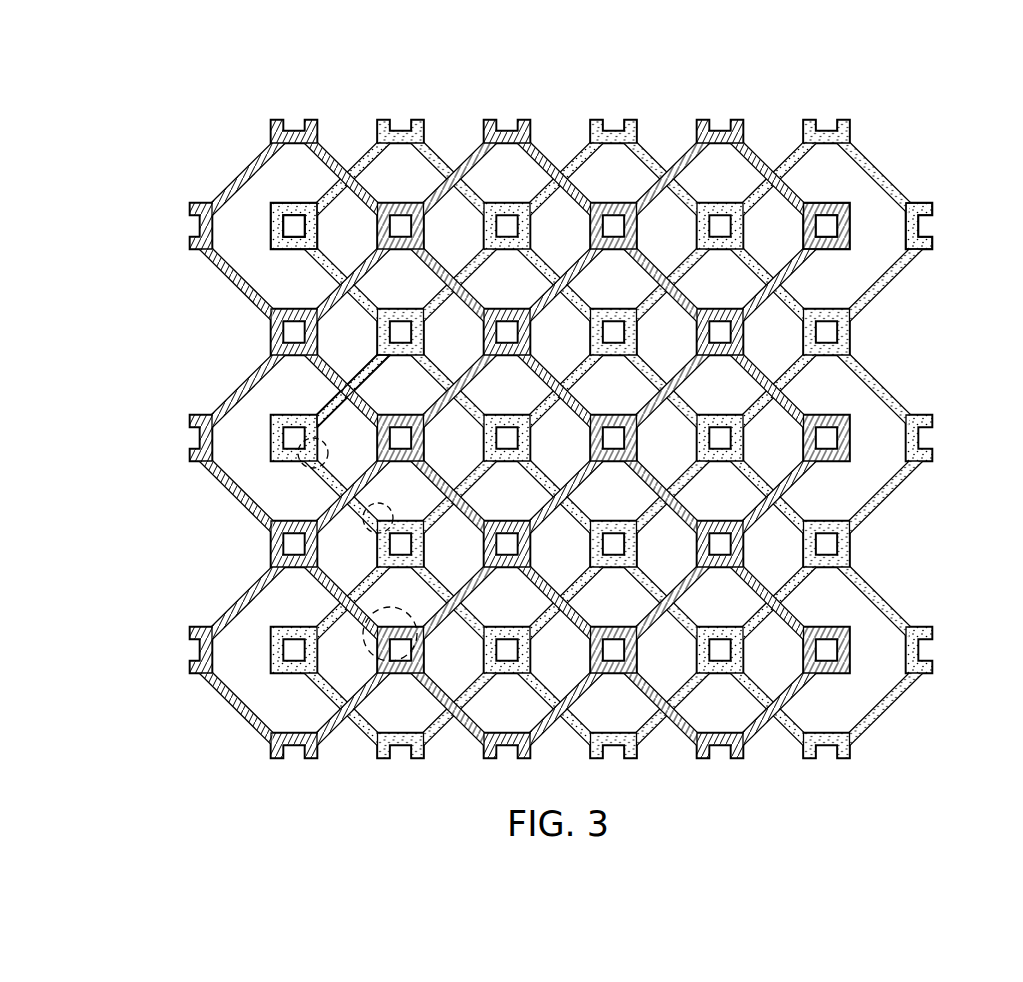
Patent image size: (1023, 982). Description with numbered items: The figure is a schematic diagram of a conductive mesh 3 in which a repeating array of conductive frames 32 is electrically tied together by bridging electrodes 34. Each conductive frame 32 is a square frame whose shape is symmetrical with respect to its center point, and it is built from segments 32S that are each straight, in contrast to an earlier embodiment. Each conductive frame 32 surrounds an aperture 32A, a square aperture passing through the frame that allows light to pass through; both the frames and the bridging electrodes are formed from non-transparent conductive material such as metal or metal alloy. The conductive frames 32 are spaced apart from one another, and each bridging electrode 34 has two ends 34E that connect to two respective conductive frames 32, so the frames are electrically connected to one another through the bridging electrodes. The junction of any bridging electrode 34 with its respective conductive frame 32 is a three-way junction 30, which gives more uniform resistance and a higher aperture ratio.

The conductive mesh 3 is at (568, 428).
The three-way junction 30 is at (376, 648).
The conductive frame 32 is at (274, 226).
The aperture 32A is at (294, 212).
The segment 32S is at (825, 216).
The bridging electrode 34 is at (334, 397).
The end 34E is at (309, 471).